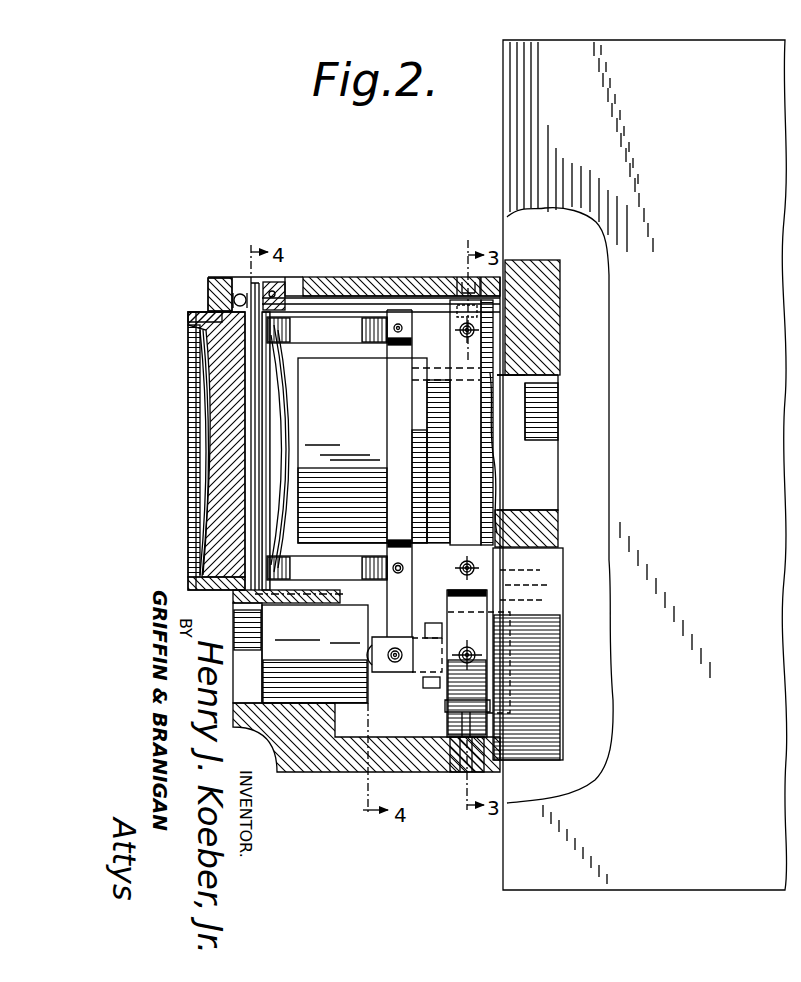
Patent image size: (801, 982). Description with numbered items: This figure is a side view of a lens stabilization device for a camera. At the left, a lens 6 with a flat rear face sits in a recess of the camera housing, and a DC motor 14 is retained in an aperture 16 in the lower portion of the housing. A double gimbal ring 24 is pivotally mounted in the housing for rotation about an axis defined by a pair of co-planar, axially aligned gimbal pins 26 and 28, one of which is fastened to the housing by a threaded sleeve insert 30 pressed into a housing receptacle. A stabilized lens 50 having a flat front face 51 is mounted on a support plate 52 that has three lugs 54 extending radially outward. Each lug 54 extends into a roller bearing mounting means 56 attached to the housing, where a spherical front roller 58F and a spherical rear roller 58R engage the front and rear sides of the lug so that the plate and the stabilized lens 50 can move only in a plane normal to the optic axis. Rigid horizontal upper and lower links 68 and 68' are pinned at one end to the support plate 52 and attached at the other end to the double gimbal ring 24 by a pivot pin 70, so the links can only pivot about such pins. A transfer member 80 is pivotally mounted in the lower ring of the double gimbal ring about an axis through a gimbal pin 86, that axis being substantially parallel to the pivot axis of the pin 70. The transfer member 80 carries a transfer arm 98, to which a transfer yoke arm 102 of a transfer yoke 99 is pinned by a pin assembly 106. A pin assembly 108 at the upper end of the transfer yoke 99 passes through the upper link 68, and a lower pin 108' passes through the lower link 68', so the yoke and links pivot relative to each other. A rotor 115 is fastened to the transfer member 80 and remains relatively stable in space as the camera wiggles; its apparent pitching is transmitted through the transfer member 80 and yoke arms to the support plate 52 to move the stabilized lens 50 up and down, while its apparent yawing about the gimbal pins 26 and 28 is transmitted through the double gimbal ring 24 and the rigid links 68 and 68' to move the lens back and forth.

The lens 6 is at (212, 541).
The DC motor 14 is at (310, 680).
The aperture 16 is at (250, 638).
The double gimbal ring 24 is at (480, 442).
The gimbal pin 26 is at (462, 290).
The gimbal pin 28 is at (456, 745).
The threaded sleeve insert 30 is at (456, 292).
The stabilized lens 50 is at (288, 430).
The flat front face 51 is at (210, 318).
The support plate 52 is at (240, 590).
The lug 54 is at (244, 294).
The roller bearing mounting means 56 is at (297, 284).
The spherical front roller 58F is at (222, 296).
The spherical rear roller 58R is at (262, 300).
The upper rigid link 68 is at (327, 330).
The lower rigid link 68' is at (327, 568).
The upper pivot pin 70 is at (460, 330).
The transfer member 80 is at (448, 700).
The gimbal pin 86 is at (488, 650).
The transfer arm 98 is at (389, 670).
The transfer yoke 99 is at (398, 430).
The transfer yoke arm 102 is at (408, 600).
The pin assembly 106 is at (423, 684).
The pin assembly 108 is at (401, 278).
The lower pin 108' is at (323, 593).
The rotor 115 is at (552, 582).